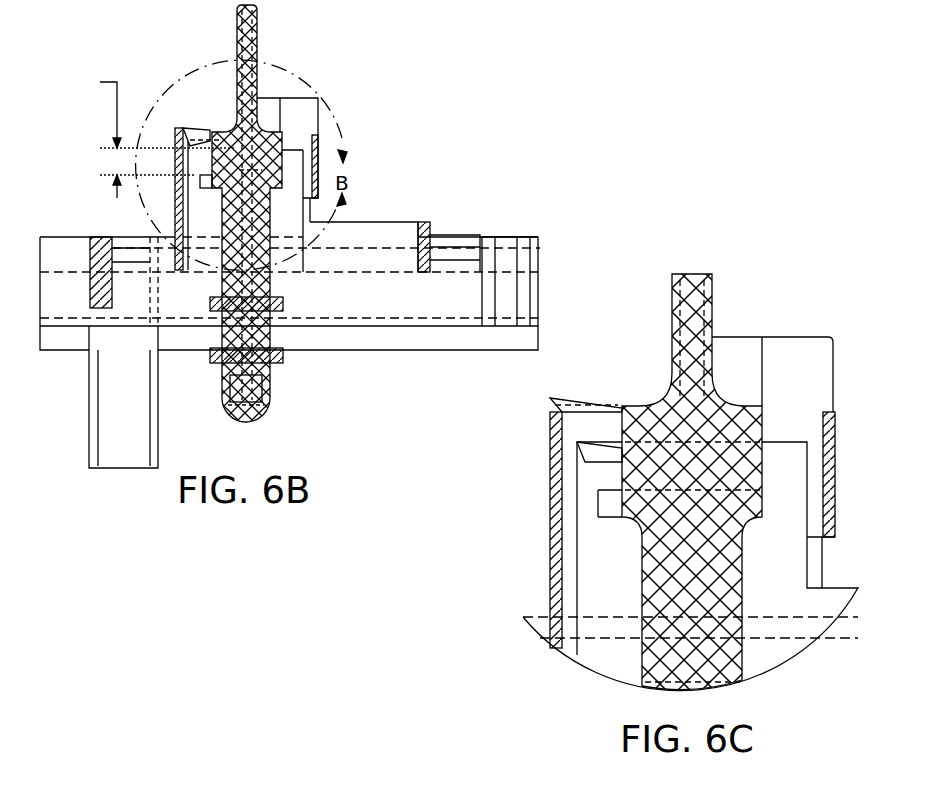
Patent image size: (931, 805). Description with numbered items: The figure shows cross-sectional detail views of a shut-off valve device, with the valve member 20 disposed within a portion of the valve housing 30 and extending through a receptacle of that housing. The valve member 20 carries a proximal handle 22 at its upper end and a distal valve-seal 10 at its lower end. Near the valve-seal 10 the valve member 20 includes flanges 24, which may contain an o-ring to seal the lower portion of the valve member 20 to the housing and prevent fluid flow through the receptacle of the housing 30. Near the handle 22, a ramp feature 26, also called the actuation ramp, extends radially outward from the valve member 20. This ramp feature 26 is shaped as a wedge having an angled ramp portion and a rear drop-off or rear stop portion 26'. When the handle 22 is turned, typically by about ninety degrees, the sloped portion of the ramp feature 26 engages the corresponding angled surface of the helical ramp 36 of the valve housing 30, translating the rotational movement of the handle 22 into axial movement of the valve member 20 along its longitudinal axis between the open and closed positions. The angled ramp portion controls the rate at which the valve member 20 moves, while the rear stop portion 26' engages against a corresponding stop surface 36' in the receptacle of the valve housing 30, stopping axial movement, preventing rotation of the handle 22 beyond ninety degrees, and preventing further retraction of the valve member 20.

In FIG. 6B, the valve-seal 10 is at (268, 408).
In FIG. 6C, the valve member 20 is at (642, 603).
In FIG. 6B, the handle 22 is at (258, 32).
In FIG. 6C, the handle 22 is at (713, 310).
In FIG. 6B, the flanges 24 is at (284, 351).
In FIG. 6B, the ramp feature 26 is at (313, 147).
In FIG. 6C, the ramp feature 26 is at (805, 473).
In FIG. 6C, the rear stop portion 26' is at (576, 517).
In FIG. 6B, the valve housing 30 is at (430, 352).
In FIG. 6B, the helical ramp 36 is at (190, 156).
In FIG. 6C, the helical ramp 36 is at (564, 523).
In FIG. 6C, the stop surface 36' is at (729, 422).